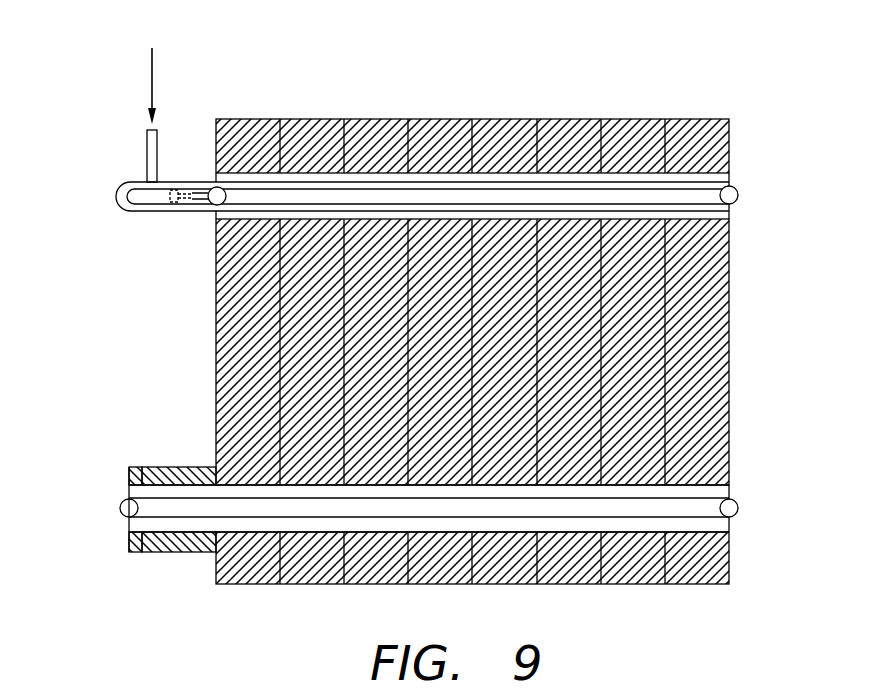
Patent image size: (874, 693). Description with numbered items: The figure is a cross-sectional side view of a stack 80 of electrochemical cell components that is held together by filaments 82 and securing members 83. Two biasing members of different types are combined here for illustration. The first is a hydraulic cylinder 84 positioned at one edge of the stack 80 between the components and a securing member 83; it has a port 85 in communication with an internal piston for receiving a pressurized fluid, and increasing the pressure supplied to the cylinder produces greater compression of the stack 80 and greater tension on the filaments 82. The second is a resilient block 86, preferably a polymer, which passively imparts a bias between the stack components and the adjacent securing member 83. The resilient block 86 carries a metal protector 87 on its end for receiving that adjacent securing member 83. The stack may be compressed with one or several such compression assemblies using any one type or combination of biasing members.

The stack 80 is at (762, 98).
The filaments 82 is at (627, 185).
The securing member 83 is at (118, 195).
The hydraulic cylinder 84 is at (175, 187).
The port 85 is at (145, 143).
The resilient block 86 is at (180, 465).
The metal protector 87 is at (125, 472).